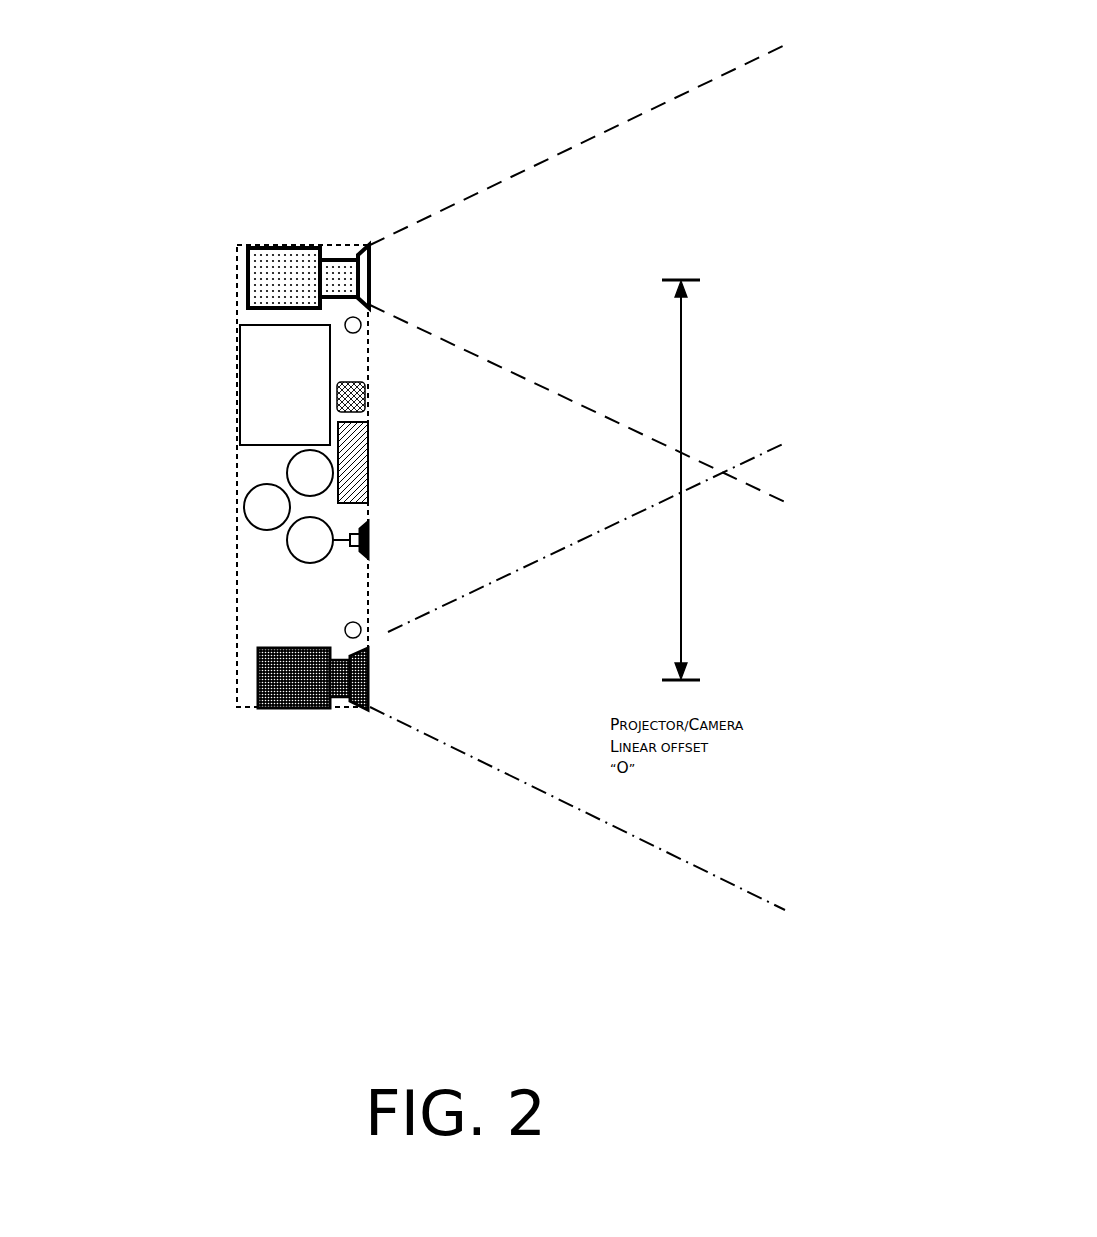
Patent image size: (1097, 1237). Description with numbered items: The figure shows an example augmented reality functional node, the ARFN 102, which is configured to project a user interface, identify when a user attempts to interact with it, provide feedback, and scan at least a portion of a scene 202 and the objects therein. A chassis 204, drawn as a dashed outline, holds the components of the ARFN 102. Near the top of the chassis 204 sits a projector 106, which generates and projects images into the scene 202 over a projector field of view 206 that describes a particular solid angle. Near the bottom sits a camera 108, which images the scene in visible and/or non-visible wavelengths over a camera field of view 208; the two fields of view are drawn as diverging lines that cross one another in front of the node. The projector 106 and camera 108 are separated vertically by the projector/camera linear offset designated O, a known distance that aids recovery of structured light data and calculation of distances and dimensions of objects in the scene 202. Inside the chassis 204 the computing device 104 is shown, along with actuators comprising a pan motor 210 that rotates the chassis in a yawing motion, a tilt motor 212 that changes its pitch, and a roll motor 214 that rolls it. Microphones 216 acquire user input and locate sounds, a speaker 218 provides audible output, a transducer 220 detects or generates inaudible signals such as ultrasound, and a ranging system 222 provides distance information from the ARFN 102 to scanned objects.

The augmented reality functional node (ARFN) 102 is at (268, 245).
The computing device 104 is at (285, 385).
The projector 106 is at (285, 275).
The camera 108 is at (290, 680).
The scene 202 is at (817, 478).
The chassis 204 is at (302, 245).
The projector field of view 206 is at (582, 143).
The camera field of view 208 is at (532, 787).
The pan motor 210 is at (288, 473).
The tilt motor 212 is at (245, 516).
The roll motor 214 is at (298, 540).
The microphone 216 is at (362, 318).
The speaker 218 is at (365, 537).
The transducer 220 is at (350, 395).
The ranging system 222 is at (356, 465).